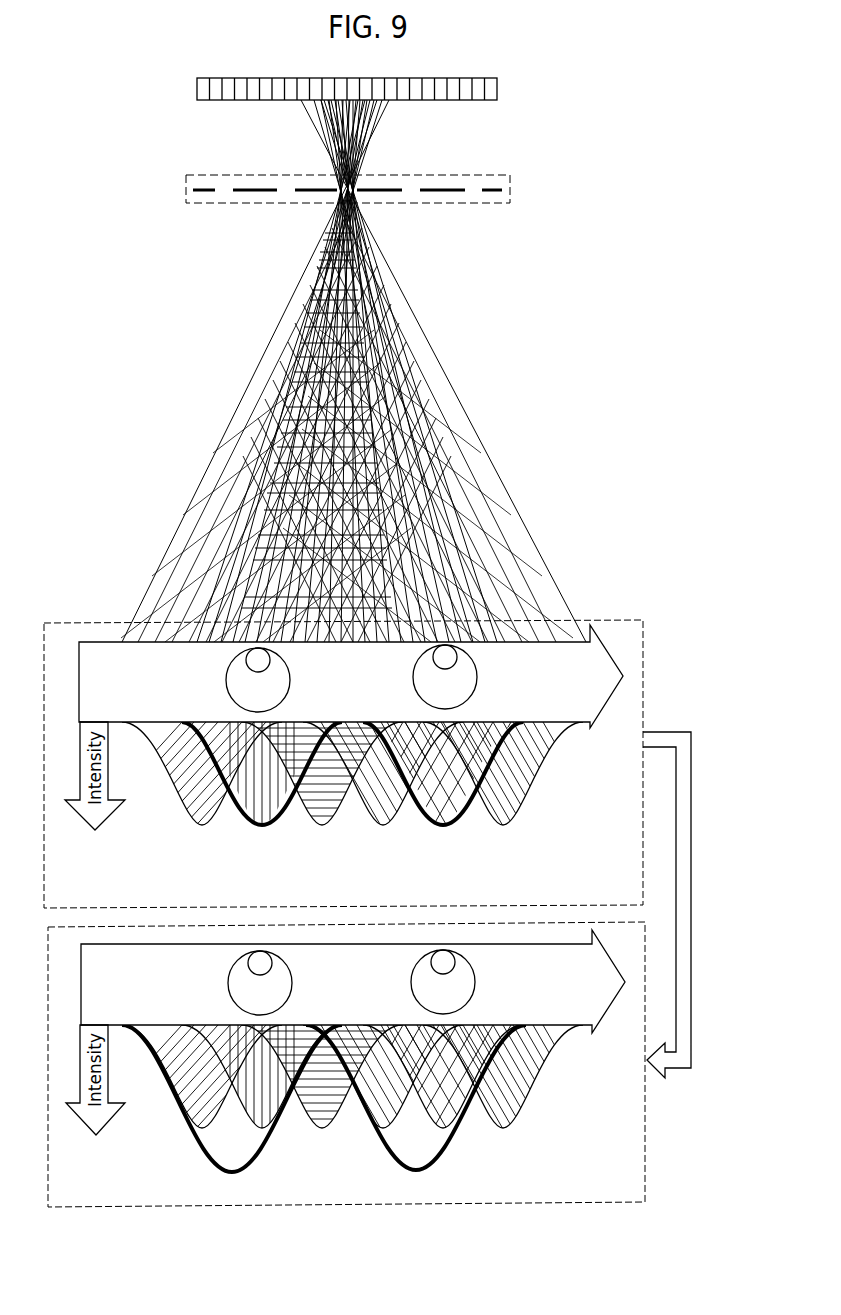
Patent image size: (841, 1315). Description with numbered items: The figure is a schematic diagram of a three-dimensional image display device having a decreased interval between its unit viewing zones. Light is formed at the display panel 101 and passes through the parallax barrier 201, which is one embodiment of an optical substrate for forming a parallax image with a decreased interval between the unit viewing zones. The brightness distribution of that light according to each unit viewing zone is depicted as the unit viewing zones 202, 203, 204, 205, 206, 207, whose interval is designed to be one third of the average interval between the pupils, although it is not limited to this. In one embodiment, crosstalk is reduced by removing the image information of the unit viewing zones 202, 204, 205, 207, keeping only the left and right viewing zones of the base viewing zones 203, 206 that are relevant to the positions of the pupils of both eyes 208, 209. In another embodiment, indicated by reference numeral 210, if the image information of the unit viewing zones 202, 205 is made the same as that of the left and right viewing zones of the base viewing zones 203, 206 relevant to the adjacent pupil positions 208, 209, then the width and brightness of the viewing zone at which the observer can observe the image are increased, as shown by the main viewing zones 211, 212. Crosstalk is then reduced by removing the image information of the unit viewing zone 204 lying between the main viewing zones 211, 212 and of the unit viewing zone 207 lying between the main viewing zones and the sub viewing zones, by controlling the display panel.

The display panel 101 is at (497, 88).
The parallax barrier 201 is at (510, 190).
The unit viewing zone 202 is at (202, 826).
The base viewing zone 203 is at (262, 826).
The unit viewing zone 204 is at (322, 826).
The unit viewing zone 205 is at (383, 826).
The base viewing zone 206 is at (443, 826).
The unit viewing zone 207 is at (503, 826).
The eye 208 is at (226, 677).
The eye 209 is at (477, 676).
The embodiment with merged viewing zones 210 is at (645, 1140).
The main viewing zone 211 is at (232, 1174).
The main viewing zone 212 is at (416, 1172).